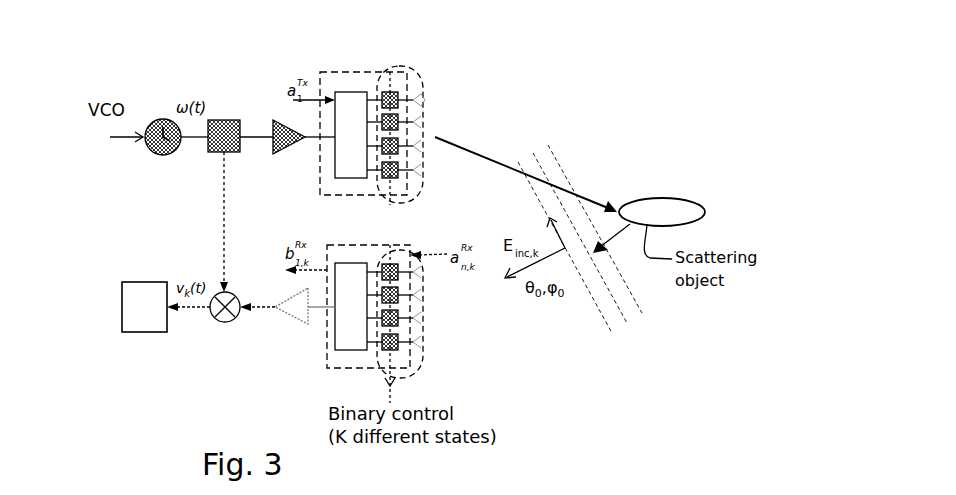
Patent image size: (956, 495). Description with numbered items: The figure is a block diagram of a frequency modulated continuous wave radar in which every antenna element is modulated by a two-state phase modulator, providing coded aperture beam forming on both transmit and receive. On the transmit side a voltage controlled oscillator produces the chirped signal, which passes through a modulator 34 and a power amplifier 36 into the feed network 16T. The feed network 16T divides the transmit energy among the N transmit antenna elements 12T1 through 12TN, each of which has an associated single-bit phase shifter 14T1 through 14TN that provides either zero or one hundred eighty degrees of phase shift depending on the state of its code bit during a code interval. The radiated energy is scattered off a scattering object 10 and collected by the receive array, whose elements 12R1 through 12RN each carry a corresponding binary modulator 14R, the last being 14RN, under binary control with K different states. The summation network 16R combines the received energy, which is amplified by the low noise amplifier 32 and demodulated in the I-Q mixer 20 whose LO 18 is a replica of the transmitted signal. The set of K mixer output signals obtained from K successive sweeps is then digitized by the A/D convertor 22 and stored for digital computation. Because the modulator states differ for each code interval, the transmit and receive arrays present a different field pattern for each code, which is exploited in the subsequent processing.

The scattering object 10 is at (645, 222).
The first transmit antenna element 12T1 is at (417, 99).
The Nth transmit antenna element 12TN is at (420, 172).
The first transmit phase shifter 14T1 is at (389, 92).
The Nth transmit phase shifter 14TN is at (396, 177).
The feed network 16T is at (351, 148).
The first receive antenna element 12R1 is at (419, 273).
The Nth receive antenna element 12RN is at (420, 344).
The receive phase shifters 14R is at (400, 233).
The Nth receive phase shifter 14RN is at (396, 350).
The summation network 16R is at (333, 326).
The local oscillator 18 is at (219, 249).
The I-Q mixer 20 is at (225, 322).
The A/D convertor 22 is at (130, 332).
The low noise amplifier 32 is at (293, 300).
The modulator 34 is at (221, 126).
The power amplifier 36 is at (288, 123).